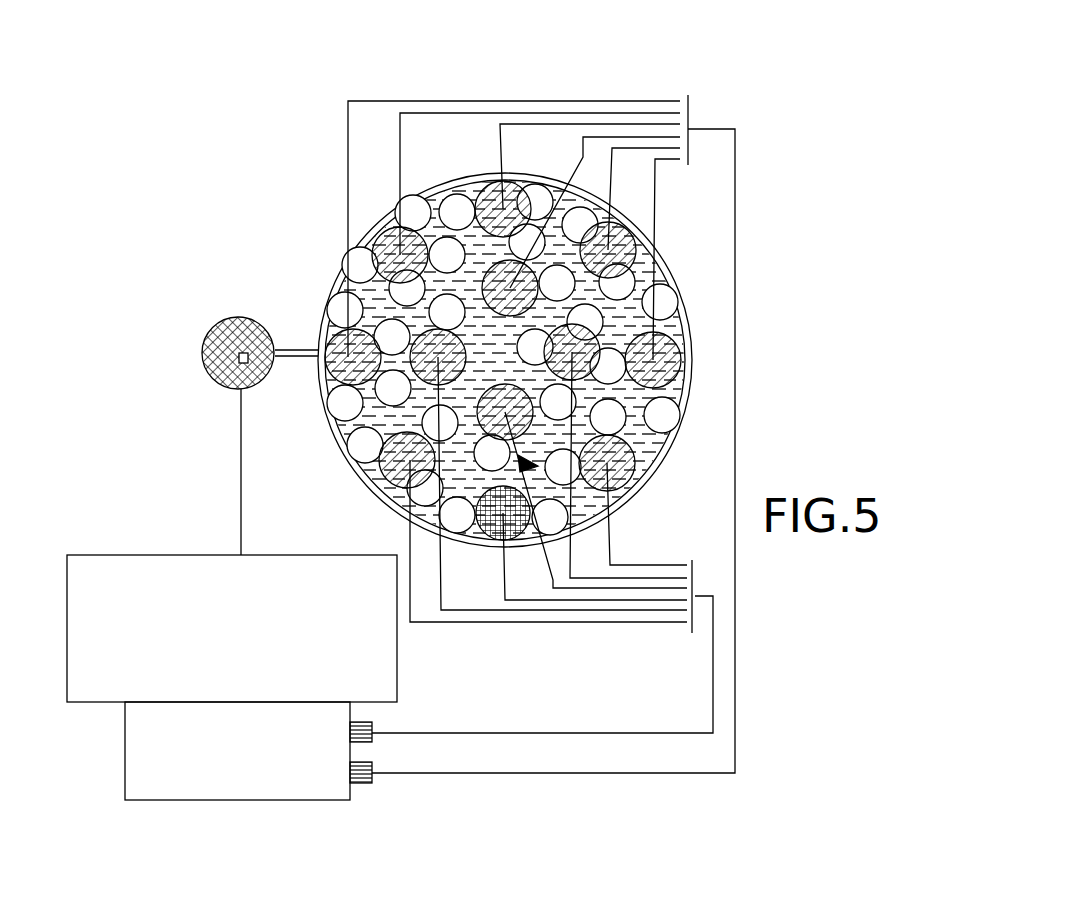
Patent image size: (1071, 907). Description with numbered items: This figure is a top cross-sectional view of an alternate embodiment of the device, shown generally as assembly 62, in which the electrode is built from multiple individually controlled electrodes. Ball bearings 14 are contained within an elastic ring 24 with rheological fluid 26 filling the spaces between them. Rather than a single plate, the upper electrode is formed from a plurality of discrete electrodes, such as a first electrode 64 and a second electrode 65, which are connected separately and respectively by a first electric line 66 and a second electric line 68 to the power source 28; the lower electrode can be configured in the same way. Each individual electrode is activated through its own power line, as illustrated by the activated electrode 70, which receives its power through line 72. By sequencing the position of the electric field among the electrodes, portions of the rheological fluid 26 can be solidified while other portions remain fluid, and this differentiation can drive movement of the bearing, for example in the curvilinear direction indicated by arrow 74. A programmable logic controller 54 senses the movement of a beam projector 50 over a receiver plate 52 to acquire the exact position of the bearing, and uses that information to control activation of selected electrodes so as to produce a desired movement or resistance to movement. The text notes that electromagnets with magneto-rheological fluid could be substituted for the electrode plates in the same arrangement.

The ball bearings 14 is at (413, 213).
The elastic ring 24 is at (673, 452).
The rheological fluid 26 is at (650, 268).
The power source 28 is at (165, 775).
The beam projector 50 is at (248, 320).
The receiver plate 52 is at (205, 370).
The programmable logic controller 54 is at (222, 556).
The treatment system 62 is at (282, 198).
The first electrode 64 is at (400, 233).
The second electrode 65 is at (328, 366).
The first electric line 66 is at (400, 128).
The second electric line 68 is at (347, 123).
The activated electrode 70 is at (474, 540).
The line 72 is at (548, 527).
The arrow 74 is at (380, 493).